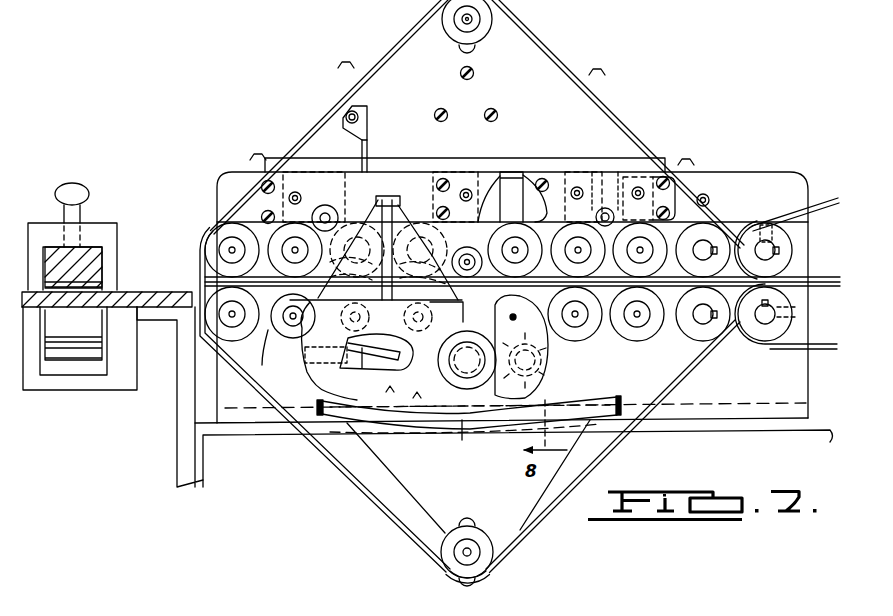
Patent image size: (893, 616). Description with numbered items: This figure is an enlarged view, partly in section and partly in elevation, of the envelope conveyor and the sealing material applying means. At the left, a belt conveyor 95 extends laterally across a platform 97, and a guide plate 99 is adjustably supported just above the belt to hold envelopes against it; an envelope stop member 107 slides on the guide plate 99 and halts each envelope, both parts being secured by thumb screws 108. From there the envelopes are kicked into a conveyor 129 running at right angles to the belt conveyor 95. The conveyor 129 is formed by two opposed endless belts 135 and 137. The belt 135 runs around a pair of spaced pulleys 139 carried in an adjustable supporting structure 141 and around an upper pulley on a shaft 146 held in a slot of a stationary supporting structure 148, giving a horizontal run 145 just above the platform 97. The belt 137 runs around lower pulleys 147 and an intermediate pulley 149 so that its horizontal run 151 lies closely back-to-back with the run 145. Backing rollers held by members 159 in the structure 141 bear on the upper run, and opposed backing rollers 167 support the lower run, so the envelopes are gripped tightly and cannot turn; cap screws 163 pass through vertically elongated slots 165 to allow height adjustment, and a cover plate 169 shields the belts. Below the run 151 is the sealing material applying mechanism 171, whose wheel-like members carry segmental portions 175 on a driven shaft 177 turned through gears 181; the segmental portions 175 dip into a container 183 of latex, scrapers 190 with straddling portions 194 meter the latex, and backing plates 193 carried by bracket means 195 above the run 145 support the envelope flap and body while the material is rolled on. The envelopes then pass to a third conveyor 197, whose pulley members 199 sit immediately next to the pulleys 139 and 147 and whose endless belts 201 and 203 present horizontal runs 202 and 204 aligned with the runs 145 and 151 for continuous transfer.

The belt conveyor 95 is at (62, 312).
The platform 97 is at (150, 290).
The guide plate 99 is at (97, 250).
The envelope stop member 107 is at (97, 228).
The thumb screws 108 is at (76, 186).
The conveyor 129 is at (203, 230).
The endless belt 135 is at (398, 46).
The conveyor belt 137 is at (340, 470).
The pulleys 139 is at (207, 247).
The adjustable supporting structure 141 is at (226, 184).
The horizontal run 145 is at (285, 332).
The shaft 146 is at (463, 22).
The pulleys 147 is at (213, 340).
The stationary supporting structure 148 is at (533, 60).
The pulley 149 is at (490, 556).
The horizontal run 151 is at (278, 358).
The members 159 is at (497, 173).
The cap screws 163 is at (602, 207).
The vertically elongated slots 165 is at (703, 193).
The backing rollers 167 is at (565, 341).
The cover plate 169 is at (318, 99).
The sealing material applying mechanism 171 is at (455, 430).
The segmental portions 175 is at (375, 430).
The shaft 177 is at (463, 438).
The gears 181 is at (603, 376).
The container 183 is at (636, 430).
The scrapers 190 is at (368, 367).
The backing plates 193 is at (512, 316).
The portions 194 is at (390, 368).
The bracket means 195 is at (364, 140).
The third conveyor 197 is at (770, 212).
The pulley members 199 is at (753, 223).
The endless belt 201 is at (823, 200).
The horizontal run 202 is at (817, 276).
The endless belt 203 is at (814, 347).
The horizontal run 204 is at (820, 288).